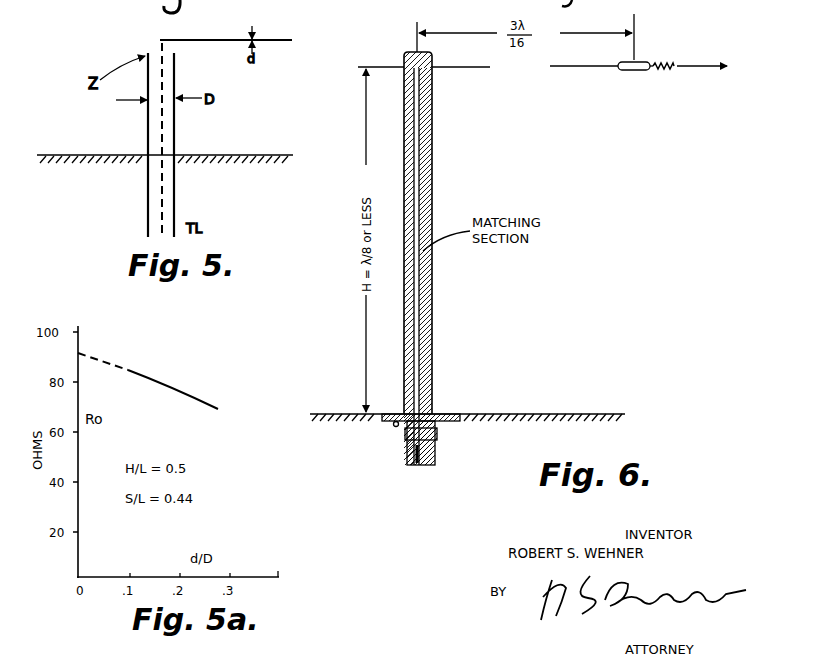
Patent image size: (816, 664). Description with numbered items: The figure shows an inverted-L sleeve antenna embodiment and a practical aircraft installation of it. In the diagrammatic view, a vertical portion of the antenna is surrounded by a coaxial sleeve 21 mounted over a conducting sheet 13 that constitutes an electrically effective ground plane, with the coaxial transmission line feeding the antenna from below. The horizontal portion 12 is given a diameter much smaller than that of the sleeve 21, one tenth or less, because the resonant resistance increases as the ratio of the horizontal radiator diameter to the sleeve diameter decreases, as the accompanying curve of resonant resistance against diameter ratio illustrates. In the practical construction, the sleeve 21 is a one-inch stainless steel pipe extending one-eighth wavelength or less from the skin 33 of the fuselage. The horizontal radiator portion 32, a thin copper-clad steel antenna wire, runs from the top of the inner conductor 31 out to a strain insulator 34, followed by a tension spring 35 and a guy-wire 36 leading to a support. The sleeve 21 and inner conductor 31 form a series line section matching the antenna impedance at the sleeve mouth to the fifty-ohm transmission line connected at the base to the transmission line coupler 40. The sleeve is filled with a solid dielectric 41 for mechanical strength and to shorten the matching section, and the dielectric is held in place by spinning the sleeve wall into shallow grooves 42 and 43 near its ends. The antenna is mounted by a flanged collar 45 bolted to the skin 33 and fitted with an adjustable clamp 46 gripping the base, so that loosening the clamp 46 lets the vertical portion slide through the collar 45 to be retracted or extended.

In FIG. 5, the horizontal portion 12 is at (226, 29).
In FIG. 5, the sleeve 21 is at (148, 119).
In FIG. 6, the sleeve 21 is at (405, 252).
In FIG. 5, the conducting sheet 13 is at (72, 154).
In FIG. 6, the inner conductor 31 is at (405, 101).
In FIG. 6, the groove 42 is at (427, 92).
In FIG. 6, the solid dielectric 41 is at (432, 213).
In FIG. 6, the horizontal radiator portion 32 is at (550, 67).
In FIG. 6, the strain insulator 34 is at (624, 61).
In FIG. 6, the tension spring 35 is at (664, 63).
In FIG. 6, the guy-wire 36 is at (724, 64).
In FIG. 6, the skin 33 is at (362, 413).
In FIG. 6, the flanged collar 45 is at (455, 413).
In FIG. 6, the groove 43 is at (437, 438).
In FIG. 6, the transmission line coupler 40 is at (418, 466).
In FIG. 6, the adjustable clamp 46 is at (394, 426).